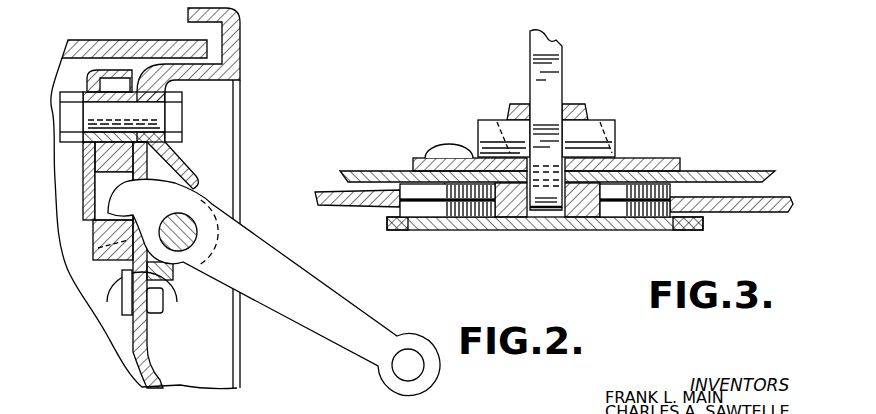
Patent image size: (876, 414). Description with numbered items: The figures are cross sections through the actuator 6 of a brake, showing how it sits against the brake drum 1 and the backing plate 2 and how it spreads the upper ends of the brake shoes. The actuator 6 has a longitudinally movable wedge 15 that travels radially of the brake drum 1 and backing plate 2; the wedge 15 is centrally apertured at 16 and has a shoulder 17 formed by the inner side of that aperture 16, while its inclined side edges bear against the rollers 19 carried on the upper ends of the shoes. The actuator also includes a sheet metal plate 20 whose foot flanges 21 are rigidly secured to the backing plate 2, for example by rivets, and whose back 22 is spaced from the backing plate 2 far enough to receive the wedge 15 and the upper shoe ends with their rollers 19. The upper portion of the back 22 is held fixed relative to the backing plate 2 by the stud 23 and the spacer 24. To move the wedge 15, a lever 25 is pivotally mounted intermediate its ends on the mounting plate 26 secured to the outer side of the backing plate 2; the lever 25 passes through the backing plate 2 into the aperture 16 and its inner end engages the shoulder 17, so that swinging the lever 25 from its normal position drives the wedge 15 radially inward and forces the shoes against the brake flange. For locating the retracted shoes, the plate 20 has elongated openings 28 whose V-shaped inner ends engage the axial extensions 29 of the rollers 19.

In FIG. 2, the brake drum 1 is at (132, 45).
In FIG. 2, the backing plate 2 is at (148, 343).
In FIG. 3, the backing plate 2 is at (712, 182).
In FIG. 2, the actuator 6 is at (176, 163).
In FIG. 3, the actuator 6 is at (500, 231).
In FIG. 2, the wedge 15 is at (108, 228).
In FIG. 3, the wedge 15 is at (583, 215).
In FIG. 2, the aperture 16 is at (108, 188).
In FIG. 3, the aperture 16 is at (535, 216).
In FIG. 2, the shoulder 17 is at (100, 202).
In FIG. 3, the shoulder 17 is at (555, 214).
In FIG. 3, the rollers 19 is at (478, 218).
In FIG. 2, the sheet metal plate 20 is at (95, 162).
In FIG. 3, the sheet metal plate 20 is at (600, 223).
In FIG. 2, the foot flanges 21 is at (128, 290).
In FIG. 3, the foot flanges 21 is at (403, 168).
In FIG. 2, the back 22 is at (107, 153).
In FIG. 3, the back 22 is at (513, 212).
In FIG. 2, the stud 23 is at (105, 113).
In FIG. 2, the spacer 24 is at (123, 97).
In FIG. 2, the lever 25 is at (297, 305).
In FIG. 3, the lever 25 is at (550, 88).
In FIG. 2, the mounting plate 26 is at (180, 180).
In FIG. 3, the mounting plate 26 is at (469, 157).
In FIG. 3, the elongated openings 28 is at (418, 229).
In FIG. 3, the axial extensions 29 is at (448, 230).